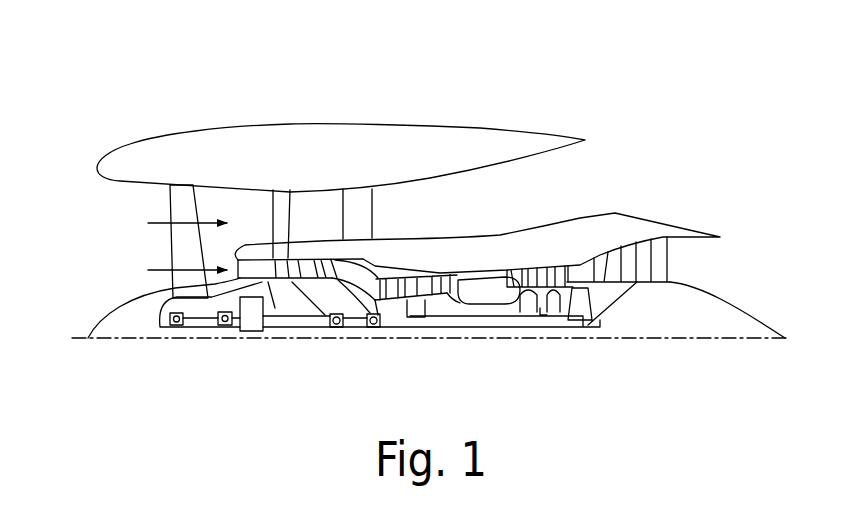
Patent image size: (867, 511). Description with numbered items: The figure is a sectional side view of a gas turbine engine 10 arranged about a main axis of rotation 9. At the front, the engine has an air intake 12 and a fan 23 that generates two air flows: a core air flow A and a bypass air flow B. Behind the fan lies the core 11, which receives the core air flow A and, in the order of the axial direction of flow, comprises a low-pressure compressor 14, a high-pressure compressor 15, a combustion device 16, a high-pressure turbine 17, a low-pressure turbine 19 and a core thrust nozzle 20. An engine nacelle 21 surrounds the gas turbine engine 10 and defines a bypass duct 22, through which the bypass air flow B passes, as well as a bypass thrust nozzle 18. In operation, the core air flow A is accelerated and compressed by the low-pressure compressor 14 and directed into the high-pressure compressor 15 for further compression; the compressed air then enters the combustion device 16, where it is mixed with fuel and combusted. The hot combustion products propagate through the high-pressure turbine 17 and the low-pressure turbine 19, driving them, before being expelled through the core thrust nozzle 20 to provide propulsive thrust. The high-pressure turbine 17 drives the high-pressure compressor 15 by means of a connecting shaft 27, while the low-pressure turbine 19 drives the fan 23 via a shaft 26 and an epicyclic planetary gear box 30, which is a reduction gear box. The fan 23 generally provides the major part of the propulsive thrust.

The main axis of rotation 9 is at (683, 340).
The gas turbine engine 10 is at (148, 139).
The core 11 is at (497, 262).
The air intake 12 is at (110, 200).
The low-pressure compressor 14 is at (305, 265).
The high-pressure compressor 15 is at (427, 276).
The combustion device 16 is at (483, 283).
The high-pressure turbine 17 is at (537, 268).
The bypass thrust nozzle 18 is at (676, 139).
The low-pressure turbine 19 is at (643, 273).
The core thrust nozzle 20 is at (722, 269).
The engine nacelle 21 is at (354, 137).
The bypass duct 22 is at (570, 178).
The fan 23 is at (177, 253).
The shaft 26 is at (395, 330).
The connecting shaft 27 is at (450, 317).
The epicyclic planetary gear box 30 is at (252, 322).